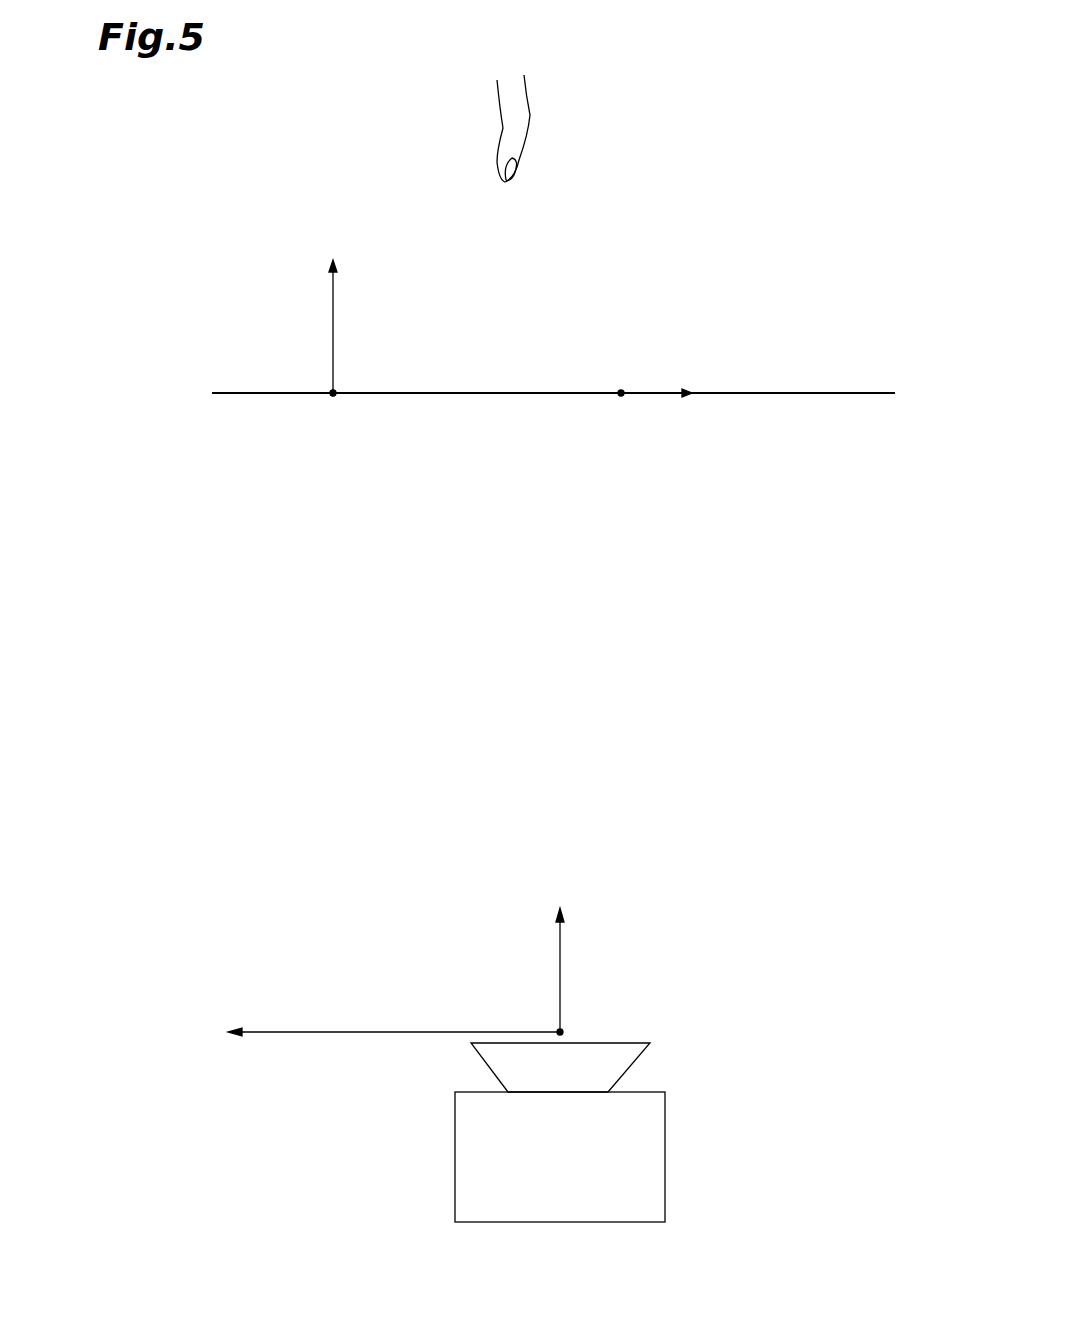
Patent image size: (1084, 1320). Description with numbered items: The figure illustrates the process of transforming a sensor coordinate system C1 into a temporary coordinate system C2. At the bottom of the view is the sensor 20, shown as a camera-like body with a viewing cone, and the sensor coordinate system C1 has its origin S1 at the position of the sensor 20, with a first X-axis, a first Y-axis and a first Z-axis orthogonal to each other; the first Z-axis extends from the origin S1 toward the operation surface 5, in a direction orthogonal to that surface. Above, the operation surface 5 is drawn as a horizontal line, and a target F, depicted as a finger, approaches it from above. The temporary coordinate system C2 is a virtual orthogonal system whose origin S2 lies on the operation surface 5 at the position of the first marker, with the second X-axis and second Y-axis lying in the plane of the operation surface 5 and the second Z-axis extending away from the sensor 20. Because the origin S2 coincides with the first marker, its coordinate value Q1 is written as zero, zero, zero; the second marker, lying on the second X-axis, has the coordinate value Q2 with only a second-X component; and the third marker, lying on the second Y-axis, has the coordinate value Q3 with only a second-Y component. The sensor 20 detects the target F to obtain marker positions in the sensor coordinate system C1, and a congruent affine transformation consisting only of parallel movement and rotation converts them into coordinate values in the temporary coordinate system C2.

The target F is at (531, 116).
The operation surface 5 is at (831, 392).
The temporary coordinate system C2 is at (368, 403).
The origin of the temporary coordinate system S2 is at (330, 393).
The coordinate value of marker M1 in the temporary coordinate system Q1 is at (337, 391).
The coordinate value of marker M2 in the temporary coordinate system Q2 is at (622, 391).
The coordinate value of marker M3 in the temporary coordinate system Q3 is at (328, 390).
The sensor coordinate system C1 is at (580, 997).
The origin of the sensor coordinate system S1 is at (558, 1030).
The sensor 20 is at (666, 1150).